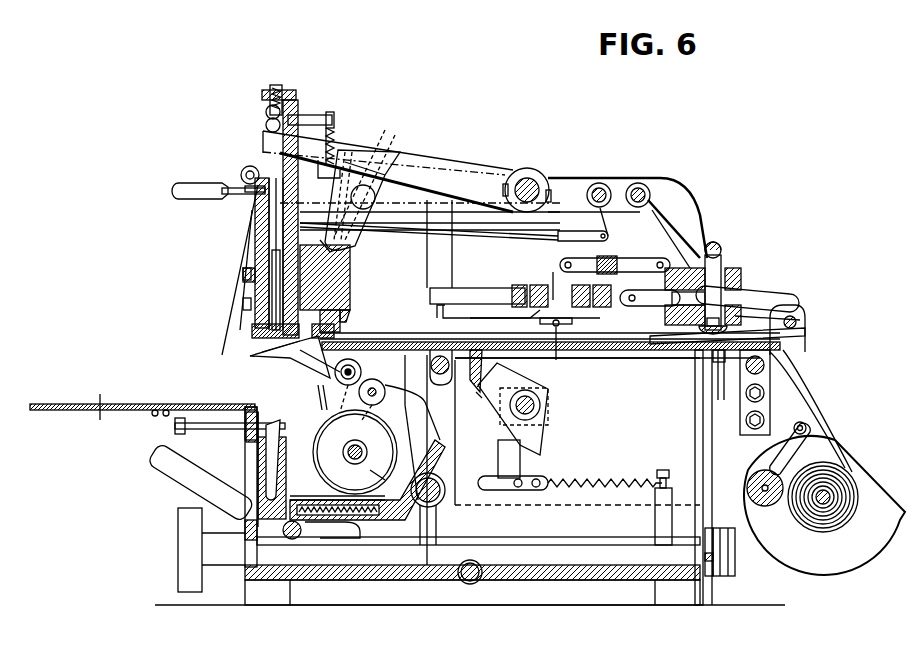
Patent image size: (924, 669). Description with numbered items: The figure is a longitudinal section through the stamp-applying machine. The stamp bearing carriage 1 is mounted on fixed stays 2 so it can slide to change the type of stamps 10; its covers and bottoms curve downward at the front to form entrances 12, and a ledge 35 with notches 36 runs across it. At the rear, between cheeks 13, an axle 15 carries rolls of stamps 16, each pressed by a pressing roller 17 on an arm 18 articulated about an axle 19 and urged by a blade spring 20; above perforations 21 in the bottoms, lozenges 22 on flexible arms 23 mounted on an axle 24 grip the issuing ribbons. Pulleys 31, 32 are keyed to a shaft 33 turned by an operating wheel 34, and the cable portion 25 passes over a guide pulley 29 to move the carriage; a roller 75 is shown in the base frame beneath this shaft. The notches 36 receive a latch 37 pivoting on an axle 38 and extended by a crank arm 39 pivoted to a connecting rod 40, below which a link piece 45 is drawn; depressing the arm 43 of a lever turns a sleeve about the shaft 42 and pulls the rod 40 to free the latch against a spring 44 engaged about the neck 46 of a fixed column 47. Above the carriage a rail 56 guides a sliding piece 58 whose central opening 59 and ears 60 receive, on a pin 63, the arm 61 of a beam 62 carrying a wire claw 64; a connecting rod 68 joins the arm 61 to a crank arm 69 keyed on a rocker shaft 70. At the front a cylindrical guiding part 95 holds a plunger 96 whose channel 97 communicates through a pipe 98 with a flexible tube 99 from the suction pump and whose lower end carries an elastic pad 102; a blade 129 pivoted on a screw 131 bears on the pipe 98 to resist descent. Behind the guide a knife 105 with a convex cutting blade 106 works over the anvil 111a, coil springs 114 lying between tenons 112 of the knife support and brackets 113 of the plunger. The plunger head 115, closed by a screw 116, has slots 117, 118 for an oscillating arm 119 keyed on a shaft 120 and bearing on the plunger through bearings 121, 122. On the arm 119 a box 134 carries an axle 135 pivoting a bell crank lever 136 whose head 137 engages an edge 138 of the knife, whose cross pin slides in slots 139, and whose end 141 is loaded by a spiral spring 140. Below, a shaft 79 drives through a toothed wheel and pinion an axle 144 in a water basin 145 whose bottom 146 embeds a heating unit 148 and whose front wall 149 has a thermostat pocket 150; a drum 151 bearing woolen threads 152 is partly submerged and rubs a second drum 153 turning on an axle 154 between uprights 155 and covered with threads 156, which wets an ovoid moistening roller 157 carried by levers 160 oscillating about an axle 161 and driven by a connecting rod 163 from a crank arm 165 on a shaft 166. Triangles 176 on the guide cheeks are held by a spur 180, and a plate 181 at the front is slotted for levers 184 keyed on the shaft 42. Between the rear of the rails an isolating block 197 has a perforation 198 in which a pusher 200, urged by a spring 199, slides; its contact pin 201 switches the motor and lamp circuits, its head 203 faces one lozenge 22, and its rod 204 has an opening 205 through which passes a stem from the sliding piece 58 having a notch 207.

The stamp bearing carriage 1 is at (614, 355).
The fixed stays 2 is at (430, 364).
The stamps 10 is at (604, 352).
The entrances 12 is at (352, 340).
The cheek 13 is at (850, 562).
The axle 15 is at (823, 505).
The rolls of stamps 16 is at (845, 505).
The pressing roller 17 is at (770, 506).
The arm 18 is at (780, 462).
The axle 19 is at (806, 426).
The blade spring 20 is at (795, 392).
The perforations 21 is at (746, 368).
The lozenge 22 is at (716, 352).
The flexible arm 23 is at (790, 338).
The axle 24 is at (806, 318).
The cable portion 25 is at (708, 440).
The guide pulley 29 is at (718, 362).
The pulley 31 is at (709, 576).
The pulley 32 is at (730, 570).
The shaft 33 is at (578, 540).
The operating wheel 34 is at (190, 550).
The ledge 35 is at (472, 375).
The notches 36 is at (476, 392).
The latch 37 is at (508, 380).
The axle 38 is at (537, 400).
The crank arm 39 is at (520, 436).
The connecting rod 40 is at (450, 460).
The shaft 42 is at (302, 530).
The arm 43 is at (168, 458).
The spring 44 is at (610, 478).
The link bar 45 is at (534, 484).
The neck 46 is at (665, 470).
The fixed column 47 is at (660, 490).
The rail 56 is at (468, 290).
The sliding piece 58 is at (516, 292).
The central opening 59 is at (548, 290).
The ears 60 is at (500, 318).
The arm 61 is at (560, 268).
The beam 62 is at (600, 318).
The pin 63 is at (556, 360).
The claw 64 is at (436, 316).
The connecting rod 68 is at (608, 272).
The crank arm 69 is at (660, 210).
The rocker shaft 70 is at (638, 183).
The roller 75 is at (470, 560).
The shaft 79 is at (446, 491).
The guiding part 95 is at (245, 284).
The plunger 96 is at (268, 214).
The channel 97 is at (273, 232).
The pipe 98 is at (225, 195).
The flexible tube 99 is at (190, 183).
The pad 102 is at (252, 332).
The knife 105 is at (350, 276).
The cutting blade 106 is at (346, 315).
The anvil 111a is at (388, 345).
The tenons 112 is at (320, 168).
The brackets 113 is at (332, 115).
The coil springs 114 is at (334, 150).
The head 115 is at (268, 95).
The screw 116 is at (278, 88).
The slot 117 is at (270, 118).
The slot 118 is at (310, 115).
The oscillating arm 119 is at (462, 162).
The shaft 120 is at (527, 178).
The bearing 121 is at (266, 123).
The bearing 122 is at (248, 166).
The blade 129 is at (255, 258).
The screw 131 is at (243, 304).
The box 134 is at (420, 188).
The axle 135 is at (370, 180).
The bell crank lever 136 is at (370, 215).
The head 137 is at (357, 246).
The edge 138 is at (326, 248).
The slots 139 is at (350, 160).
The spiral spring 140 is at (376, 197).
The end 141 is at (388, 145).
The axle 144 is at (345, 454).
The basin 145 is at (337, 489).
The bottom 146 is at (368, 518).
The electrical heating unit 148 is at (362, 490).
The front wall 149 is at (262, 480).
The pocket 150 is at (265, 450).
The drum 151 is at (355, 460).
The woolen threads 152 is at (305, 410).
The second drum 153 is at (338, 382).
The axle 154 is at (430, 400).
The uprights 155 is at (348, 412).
The woolen threads 156 is at (380, 385).
The moistening roller 157 is at (332, 372).
The lever 160 is at (252, 240).
The axle 161 is at (248, 182).
The connecting rod 163 is at (503, 233).
The crank arm 165 is at (590, 232).
The shaft 166 is at (599, 183).
The triangles 176 is at (268, 356).
The spur 180 is at (280, 346).
The plate 181 is at (142, 396).
The levers 184 is at (316, 393).
The isolating block 197 is at (670, 258).
The perforation 198 is at (700, 280).
The spring 199 is at (775, 290).
The pusher 200 is at (720, 250).
The contact pin 201 is at (714, 248).
The head 203 is at (765, 315).
The rod 204 is at (698, 303).
The opening 205 is at (740, 270).
The notch 207 is at (722, 325).